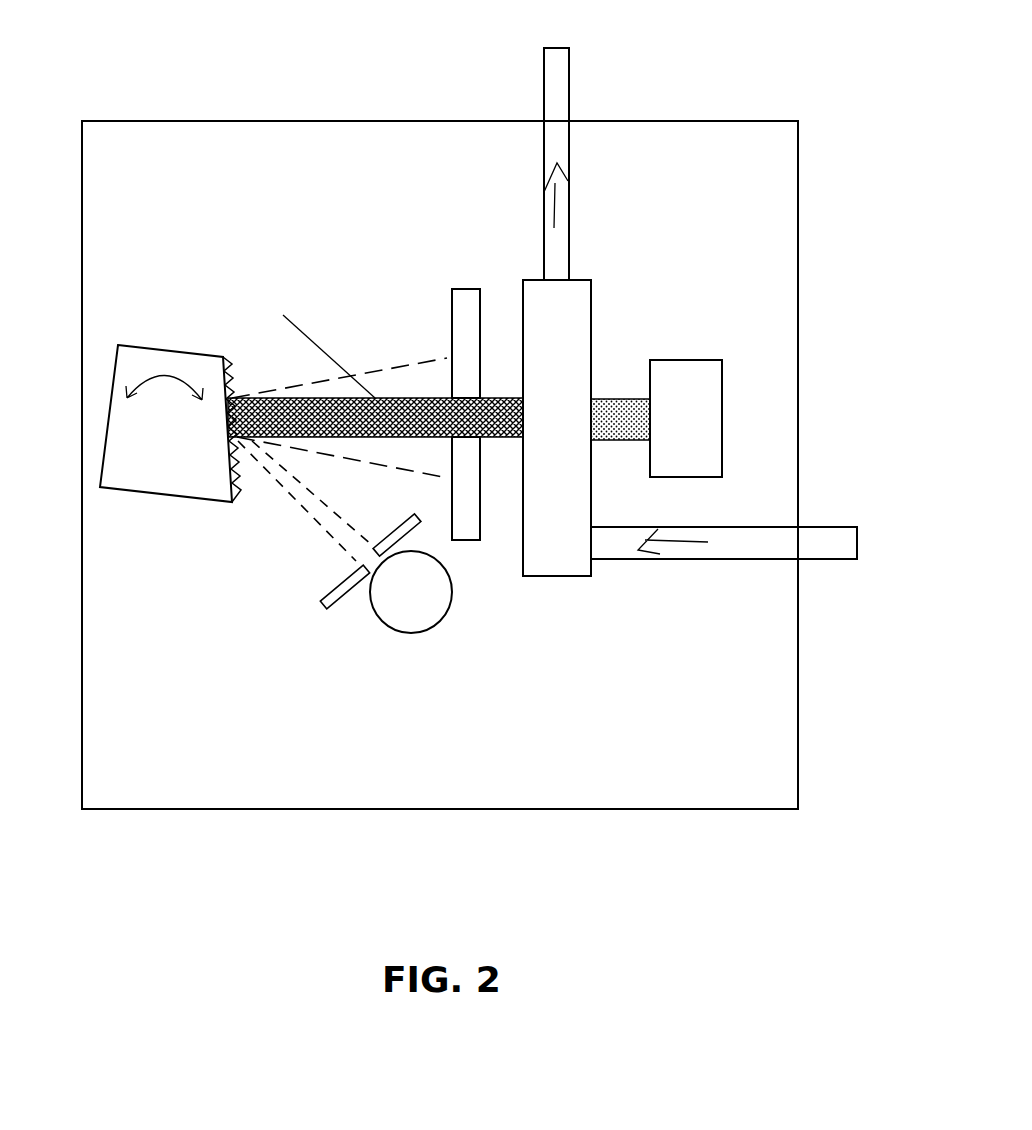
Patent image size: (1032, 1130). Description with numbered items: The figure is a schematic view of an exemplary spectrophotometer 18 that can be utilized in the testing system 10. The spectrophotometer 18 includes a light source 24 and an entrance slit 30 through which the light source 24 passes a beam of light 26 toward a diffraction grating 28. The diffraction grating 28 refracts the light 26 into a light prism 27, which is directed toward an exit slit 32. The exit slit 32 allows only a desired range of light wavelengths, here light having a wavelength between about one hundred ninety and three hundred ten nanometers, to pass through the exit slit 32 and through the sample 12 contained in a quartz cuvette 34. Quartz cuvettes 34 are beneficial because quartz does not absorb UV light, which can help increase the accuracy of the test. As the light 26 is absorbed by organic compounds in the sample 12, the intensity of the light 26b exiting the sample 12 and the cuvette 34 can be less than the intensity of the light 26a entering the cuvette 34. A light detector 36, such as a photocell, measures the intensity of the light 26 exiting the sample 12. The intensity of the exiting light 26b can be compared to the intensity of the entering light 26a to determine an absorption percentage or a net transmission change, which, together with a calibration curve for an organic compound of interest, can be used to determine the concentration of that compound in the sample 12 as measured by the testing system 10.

The testing system 10 is at (764, 57).
The sample 12 is at (576, 438).
The spectrophotometer 18 is at (227, 119).
The light source 24 is at (430, 615).
The beam of light 26 is at (317, 520).
The light entering the cuvette 26a is at (420, 398).
The light exiting the sample and cuvette 26b is at (615, 397).
The light prism 27 is at (282, 390).
The diffraction grating 28 is at (145, 477).
The entrance slit 30 is at (333, 603).
The exit slit 32 is at (467, 288).
The quartz cuvette 34 is at (590, 280).
The light detector 36 is at (716, 413).